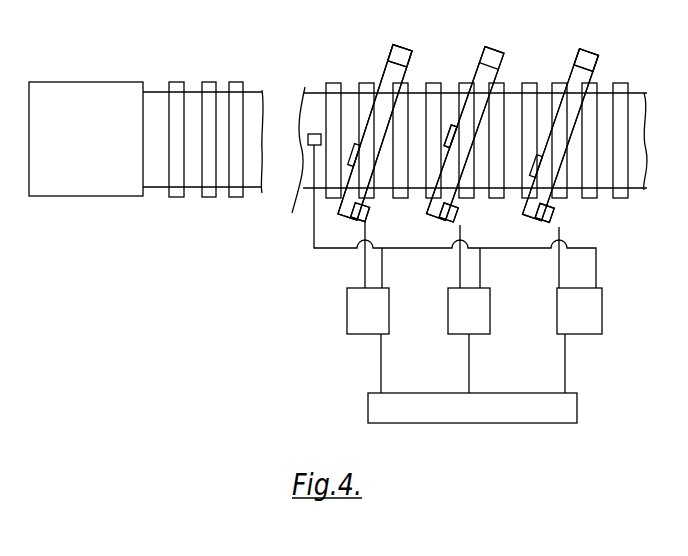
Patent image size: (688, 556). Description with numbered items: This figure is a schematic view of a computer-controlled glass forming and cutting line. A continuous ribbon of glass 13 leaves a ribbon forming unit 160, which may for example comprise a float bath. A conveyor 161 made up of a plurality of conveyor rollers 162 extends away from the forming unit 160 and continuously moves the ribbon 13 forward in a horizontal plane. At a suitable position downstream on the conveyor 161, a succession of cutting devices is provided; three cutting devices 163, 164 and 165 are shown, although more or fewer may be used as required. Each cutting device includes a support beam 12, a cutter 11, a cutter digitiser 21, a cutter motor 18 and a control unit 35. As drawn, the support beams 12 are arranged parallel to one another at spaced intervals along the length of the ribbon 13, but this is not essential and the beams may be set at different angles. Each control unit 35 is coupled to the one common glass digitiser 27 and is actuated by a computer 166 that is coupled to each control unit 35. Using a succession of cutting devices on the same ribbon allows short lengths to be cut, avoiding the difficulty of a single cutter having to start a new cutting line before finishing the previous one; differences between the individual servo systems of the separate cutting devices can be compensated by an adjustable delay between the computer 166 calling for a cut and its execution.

The ribbon forming unit 160 is at (86, 139).
The continuous ribbon of glass 13 is at (192, 96).
The conveyor 161 is at (219, 85).
The conveyor rollers 162 is at (207, 198).
The glass digitiser 27 is at (308, 141).
The support beam 12 is at (390, 83).
The cutter motor 18 is at (410, 55).
The cutting device 163 is at (393, 37).
The cutting device 164 is at (503, 43).
The cutting device 165 is at (592, 43).
The cutter 11 is at (452, 124).
The cutter digitiser 21 is at (366, 212).
The control unit 35 is at (474, 340).
The computer 166 is at (538, 393).